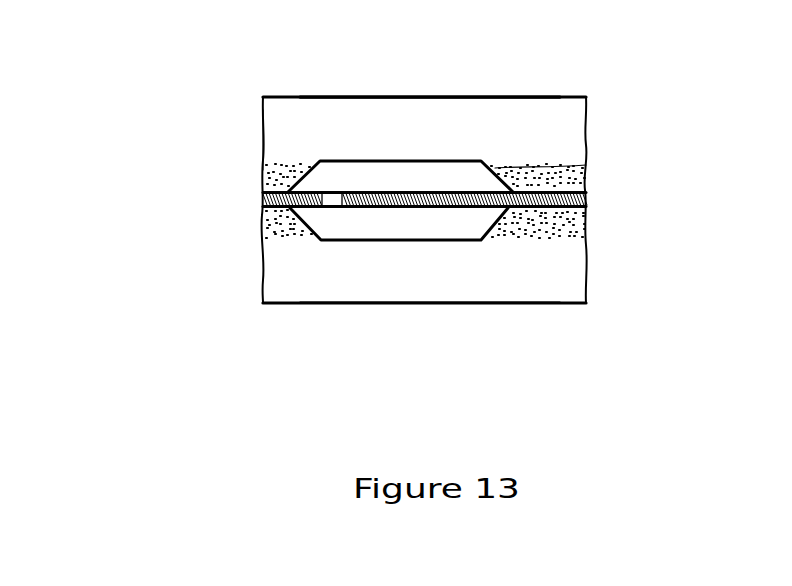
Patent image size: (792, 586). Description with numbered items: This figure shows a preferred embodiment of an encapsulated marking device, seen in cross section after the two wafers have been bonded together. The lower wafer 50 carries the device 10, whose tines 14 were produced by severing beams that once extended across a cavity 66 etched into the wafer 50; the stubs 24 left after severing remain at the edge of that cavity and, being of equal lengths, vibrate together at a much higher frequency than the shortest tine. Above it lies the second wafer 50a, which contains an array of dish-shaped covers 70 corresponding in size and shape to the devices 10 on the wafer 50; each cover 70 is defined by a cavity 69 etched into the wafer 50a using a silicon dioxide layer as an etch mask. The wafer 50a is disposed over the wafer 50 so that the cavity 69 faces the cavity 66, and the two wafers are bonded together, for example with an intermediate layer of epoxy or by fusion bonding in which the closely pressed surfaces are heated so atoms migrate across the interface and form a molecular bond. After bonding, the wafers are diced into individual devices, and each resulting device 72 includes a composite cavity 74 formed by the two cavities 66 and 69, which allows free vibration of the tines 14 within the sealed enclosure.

The device 10 is at (538, 277).
The tine 14 is at (352, 200).
The stub 24 is at (313, 208).
The wafer 50 is at (273, 278).
The wafer 50a is at (548, 135).
The cavity 66 is at (443, 223).
The cavity 69 is at (390, 175).
The dish-shaped cover 70 is at (540, 107).
The device 72 is at (252, 134).
The composite cavity 74 is at (587, 173).